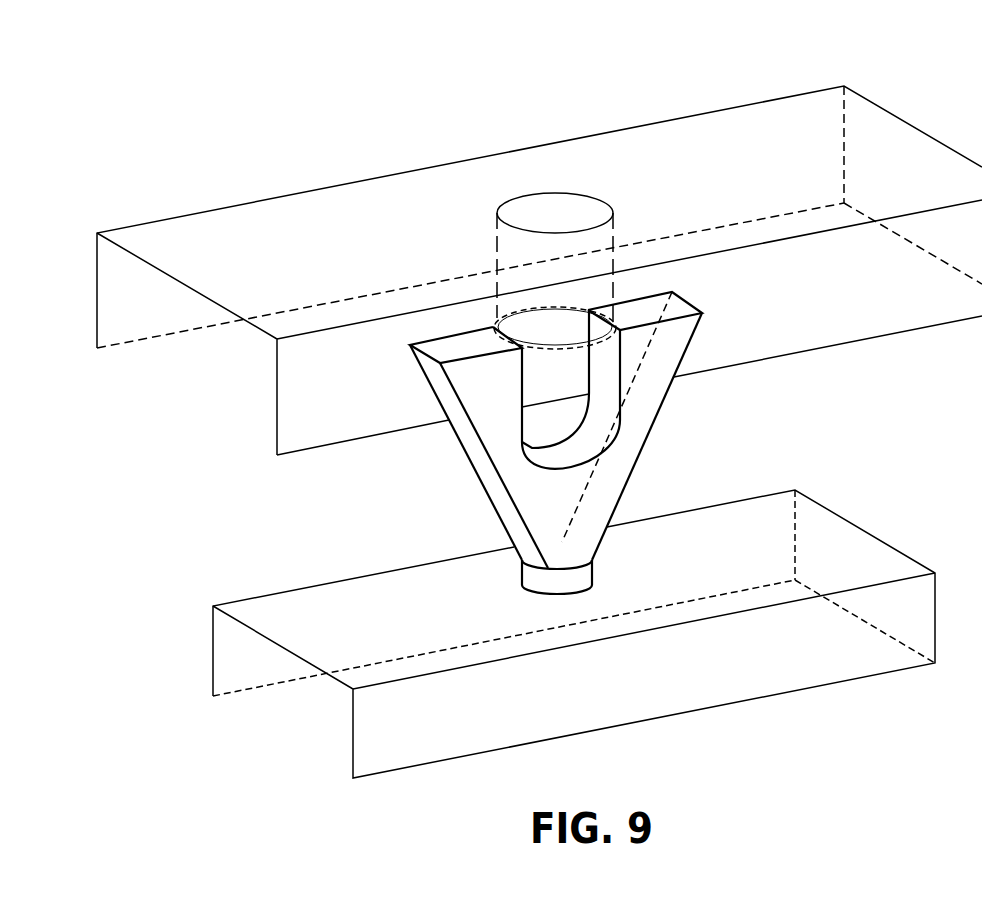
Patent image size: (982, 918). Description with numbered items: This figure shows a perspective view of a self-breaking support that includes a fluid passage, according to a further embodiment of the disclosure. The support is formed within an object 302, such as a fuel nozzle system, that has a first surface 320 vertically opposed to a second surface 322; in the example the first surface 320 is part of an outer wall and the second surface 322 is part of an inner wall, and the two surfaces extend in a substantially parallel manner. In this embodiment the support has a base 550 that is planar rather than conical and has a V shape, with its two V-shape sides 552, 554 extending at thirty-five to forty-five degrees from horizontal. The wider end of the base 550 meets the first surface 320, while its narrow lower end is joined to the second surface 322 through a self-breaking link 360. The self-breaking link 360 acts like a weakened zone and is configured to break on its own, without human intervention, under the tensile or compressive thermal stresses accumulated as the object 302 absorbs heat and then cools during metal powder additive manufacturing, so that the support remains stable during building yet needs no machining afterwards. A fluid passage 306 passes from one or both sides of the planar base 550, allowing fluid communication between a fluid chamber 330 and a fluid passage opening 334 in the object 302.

The object 302 is at (141, 414).
The first surface 320 is at (252, 442).
The second surface 322 is at (295, 608).
The fluid chamber 330 is at (537, 443).
The fluid passage opening 334 is at (615, 230).
The fluid passage 306 is at (647, 389).
The base 550 is at (637, 416).
The V-shape side 552 is at (620, 465).
The V-shape side 554 is at (500, 500).
The self-breaking link 360 is at (575, 575).